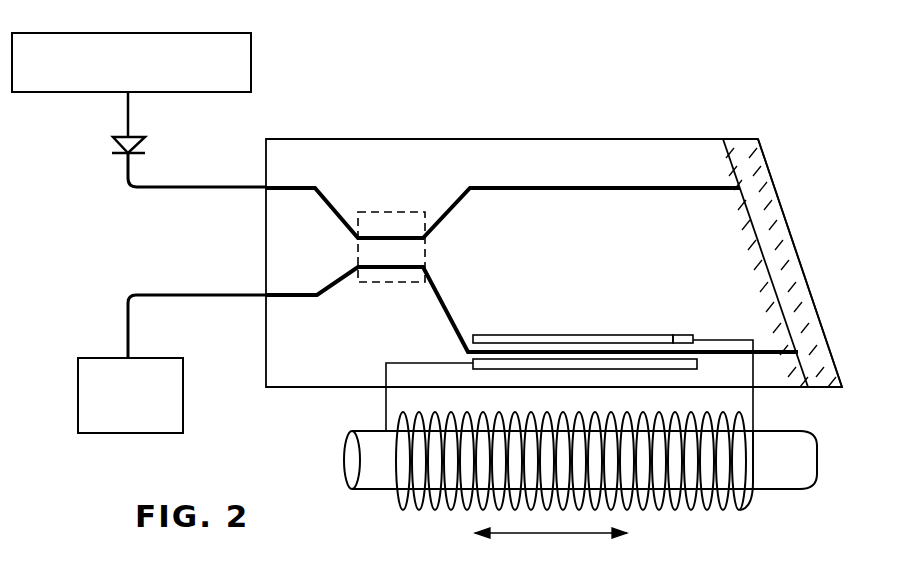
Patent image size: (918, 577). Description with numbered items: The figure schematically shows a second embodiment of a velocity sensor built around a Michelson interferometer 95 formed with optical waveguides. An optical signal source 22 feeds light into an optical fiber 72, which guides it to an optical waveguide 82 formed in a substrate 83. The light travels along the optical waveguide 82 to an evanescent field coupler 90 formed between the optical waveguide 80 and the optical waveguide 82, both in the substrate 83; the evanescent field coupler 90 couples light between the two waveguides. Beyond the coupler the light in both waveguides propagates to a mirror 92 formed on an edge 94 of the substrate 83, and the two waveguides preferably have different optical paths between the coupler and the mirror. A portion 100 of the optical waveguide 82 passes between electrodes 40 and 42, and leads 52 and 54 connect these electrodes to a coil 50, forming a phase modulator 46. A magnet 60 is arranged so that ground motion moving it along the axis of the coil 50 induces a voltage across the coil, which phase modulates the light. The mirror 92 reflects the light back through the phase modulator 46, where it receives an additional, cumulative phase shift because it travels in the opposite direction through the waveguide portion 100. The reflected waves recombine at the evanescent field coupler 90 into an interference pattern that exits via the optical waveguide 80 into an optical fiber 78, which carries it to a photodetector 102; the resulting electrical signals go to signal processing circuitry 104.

The optical signal source 22 is at (183, 387).
The electrode 40 is at (603, 335).
The electrode 42 is at (555, 358).
The phase modulator 46 is at (663, 263).
The coil 50 is at (660, 513).
The lead 52 is at (386, 418).
The lead 54 is at (753, 397).
The magnet 60 is at (773, 492).
The optical fiber 72 is at (128, 317).
The optical fiber 78 is at (175, 188).
The optical waveguide 80 is at (282, 190).
The optical waveguide 82 is at (303, 298).
The substrate 83 is at (637, 139).
The evanescent field coupler 90 is at (397, 283).
The mirror 92 is at (770, 172).
The edge 94 is at (768, 268).
The Michelson interferometer 95 is at (557, 158).
The portion 100 is at (677, 342).
The photodetector 102 is at (116, 140).
The signal processing circuitry 104 is at (252, 78).